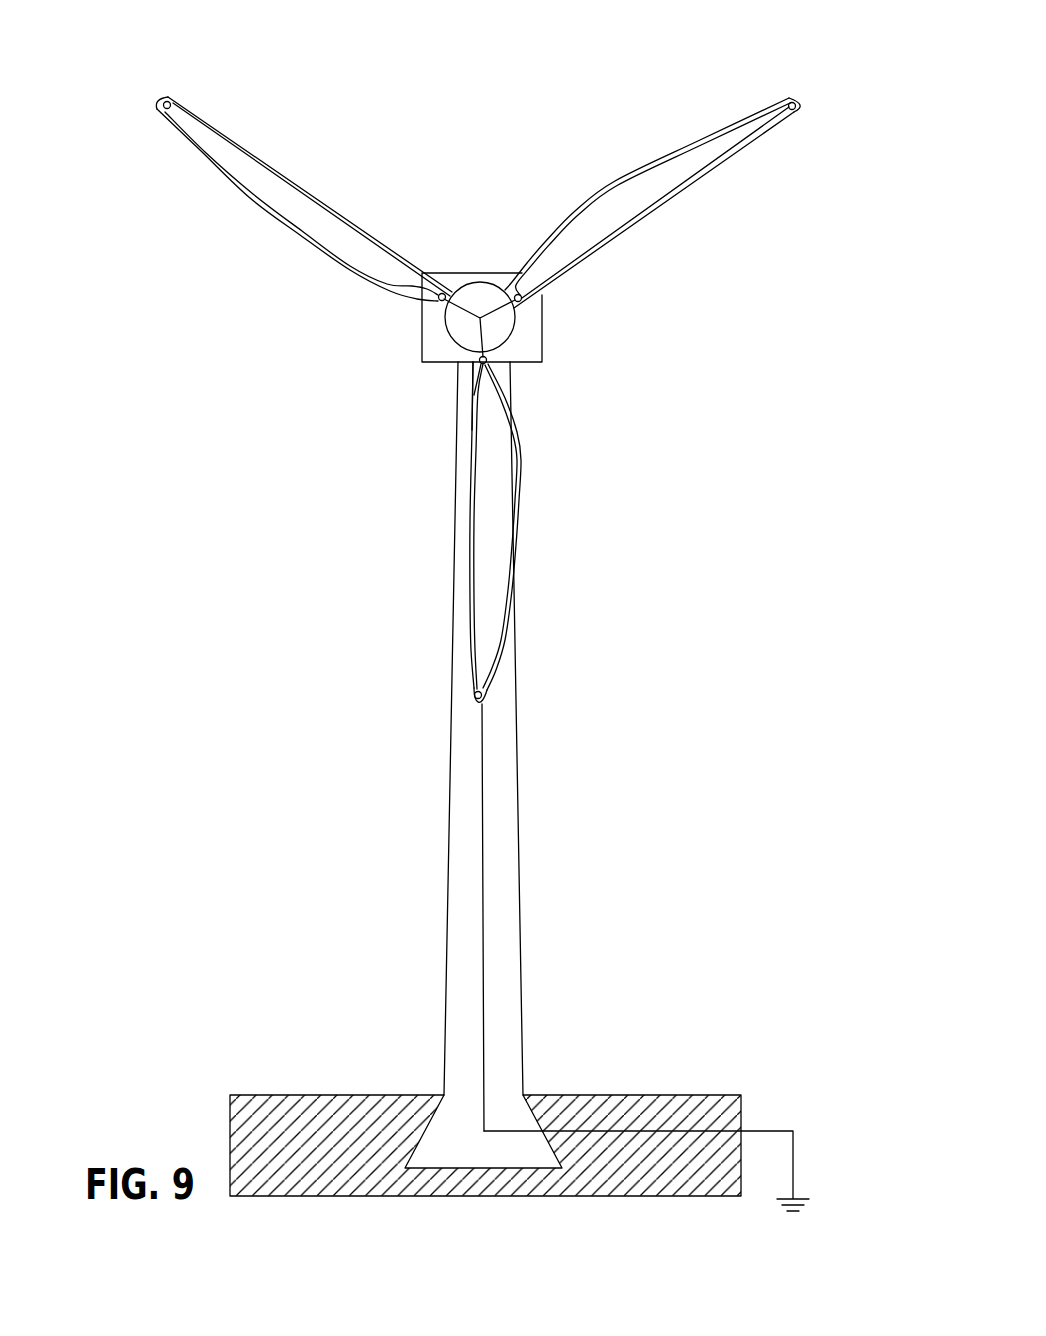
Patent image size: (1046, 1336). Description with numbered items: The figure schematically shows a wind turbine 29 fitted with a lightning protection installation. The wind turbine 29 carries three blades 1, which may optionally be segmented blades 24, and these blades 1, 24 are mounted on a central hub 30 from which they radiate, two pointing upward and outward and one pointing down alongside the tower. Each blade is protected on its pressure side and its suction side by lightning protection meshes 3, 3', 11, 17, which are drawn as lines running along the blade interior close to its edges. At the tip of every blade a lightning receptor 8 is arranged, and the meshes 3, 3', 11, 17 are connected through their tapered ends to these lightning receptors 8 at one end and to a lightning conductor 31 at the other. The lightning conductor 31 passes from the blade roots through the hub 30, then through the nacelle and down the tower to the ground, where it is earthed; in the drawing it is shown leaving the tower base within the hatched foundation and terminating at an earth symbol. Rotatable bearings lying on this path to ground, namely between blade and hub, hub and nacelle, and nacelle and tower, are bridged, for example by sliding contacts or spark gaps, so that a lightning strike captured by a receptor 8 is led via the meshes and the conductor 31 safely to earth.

The blade 1 is at (478, 364).
The segmented blade 24 is at (172, 100).
The mesh 3 is at (428, 396).
The mesh 3' is at (478, 396).
The mesh 11 is at (478, 396).
The mesh 17 is at (248, 173).
The lightning receptor 8 is at (166, 100).
The wind turbine 29 is at (477, 150).
The hub 30 is at (488, 320).
The lightning conductor 31 is at (775, 1130).